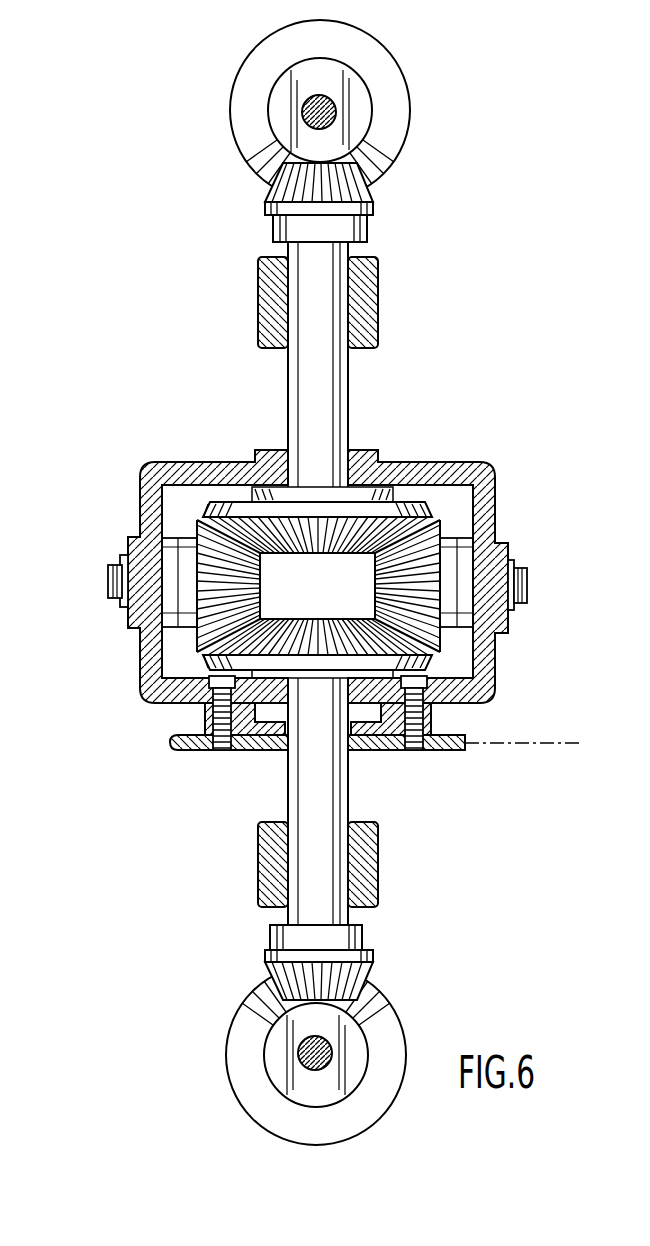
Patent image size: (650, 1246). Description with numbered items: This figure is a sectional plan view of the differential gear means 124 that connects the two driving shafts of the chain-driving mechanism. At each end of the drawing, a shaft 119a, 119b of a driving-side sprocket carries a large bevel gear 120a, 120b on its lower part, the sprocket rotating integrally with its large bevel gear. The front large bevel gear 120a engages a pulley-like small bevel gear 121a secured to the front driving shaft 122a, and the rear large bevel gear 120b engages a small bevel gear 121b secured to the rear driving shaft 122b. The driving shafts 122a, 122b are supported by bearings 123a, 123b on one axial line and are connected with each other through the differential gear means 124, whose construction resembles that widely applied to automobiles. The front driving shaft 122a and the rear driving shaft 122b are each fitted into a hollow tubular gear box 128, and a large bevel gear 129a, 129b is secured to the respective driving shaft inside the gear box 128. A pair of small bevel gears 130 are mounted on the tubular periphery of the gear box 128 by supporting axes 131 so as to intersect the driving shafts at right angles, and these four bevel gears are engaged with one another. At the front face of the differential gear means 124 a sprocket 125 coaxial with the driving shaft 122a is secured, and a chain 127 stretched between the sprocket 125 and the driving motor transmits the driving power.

The shaft 119a is at (300, 1045).
The shaft 119b is at (303, 116).
The large bevel gear 120a is at (370, 992).
The large bevel gear 120b is at (393, 142).
The small bevel gear 121a is at (352, 935).
The small bevel gear 121b is at (273, 230).
The driving shaft 122a is at (294, 783).
The driving shaft 122b is at (298, 375).
The bearing 123a is at (262, 826).
The bearing 123b is at (258, 348).
The differential gear means 124 is at (233, 448).
The sprocket 125 is at (462, 745).
The chain 127 is at (487, 750).
The gear box 128 is at (140, 660).
The large bevel gear 129a is at (140, 682).
The large bevel gear 129b is at (403, 470).
The small bevel gears 130 is at (197, 530).
The supporting axes 131 is at (110, 600).